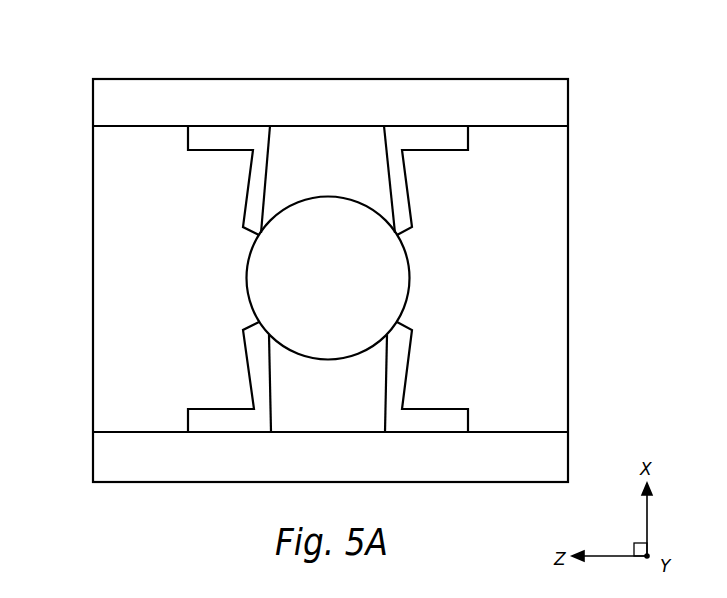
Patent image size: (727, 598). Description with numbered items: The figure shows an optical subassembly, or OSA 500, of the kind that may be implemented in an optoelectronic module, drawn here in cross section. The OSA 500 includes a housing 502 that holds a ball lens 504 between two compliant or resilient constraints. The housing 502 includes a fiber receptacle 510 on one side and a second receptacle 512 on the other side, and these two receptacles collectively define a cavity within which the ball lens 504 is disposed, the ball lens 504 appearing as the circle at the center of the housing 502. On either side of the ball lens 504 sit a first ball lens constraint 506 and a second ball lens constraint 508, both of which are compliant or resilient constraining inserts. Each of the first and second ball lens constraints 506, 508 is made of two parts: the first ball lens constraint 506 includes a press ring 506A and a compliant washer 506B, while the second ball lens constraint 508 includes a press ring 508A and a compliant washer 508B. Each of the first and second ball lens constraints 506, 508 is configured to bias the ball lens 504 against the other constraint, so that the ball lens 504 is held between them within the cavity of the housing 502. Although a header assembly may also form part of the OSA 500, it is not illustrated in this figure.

The OSA 500 is at (595, 83).
The housing 502 is at (513, 79).
The ball lens 504 is at (350, 280).
The first ball lens constraint 506 is at (298, 60).
The press ring 506A is at (197, 157).
The compliant washer 506B is at (270, 185).
The second ball lens constraint 508 is at (477, 58).
The press ring 508A is at (435, 152).
The compliant washer 508B is at (383, 183).
The fiber receptacle 510 is at (162, 281).
The second receptacle 512 is at (522, 275).